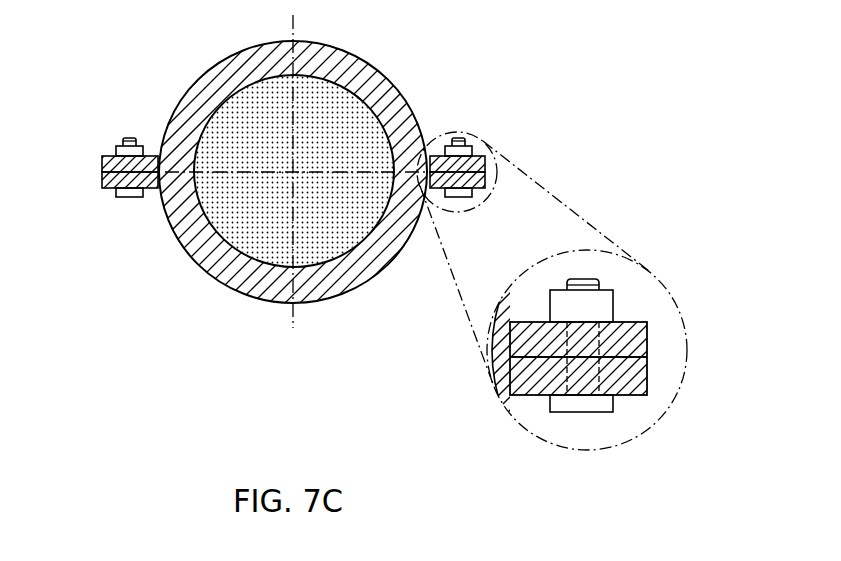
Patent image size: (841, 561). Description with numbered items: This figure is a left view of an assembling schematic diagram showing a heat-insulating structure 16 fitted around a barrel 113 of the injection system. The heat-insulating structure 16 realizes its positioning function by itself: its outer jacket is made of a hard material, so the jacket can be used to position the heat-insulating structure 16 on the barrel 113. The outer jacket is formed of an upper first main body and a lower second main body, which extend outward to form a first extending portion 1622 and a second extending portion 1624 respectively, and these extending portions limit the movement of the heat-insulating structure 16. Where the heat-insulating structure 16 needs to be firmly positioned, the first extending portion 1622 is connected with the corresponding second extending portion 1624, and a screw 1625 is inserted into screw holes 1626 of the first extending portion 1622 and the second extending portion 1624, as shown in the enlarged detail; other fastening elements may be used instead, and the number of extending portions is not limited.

The heat-insulating structure 16 is at (213, 259).
The barrel 113 is at (340, 125).
The first extending portion 1622 is at (485, 158).
The second extending portion 1624 is at (485, 188).
The screw 1625 is at (613, 305).
The screw hole 1626 is at (598, 343).